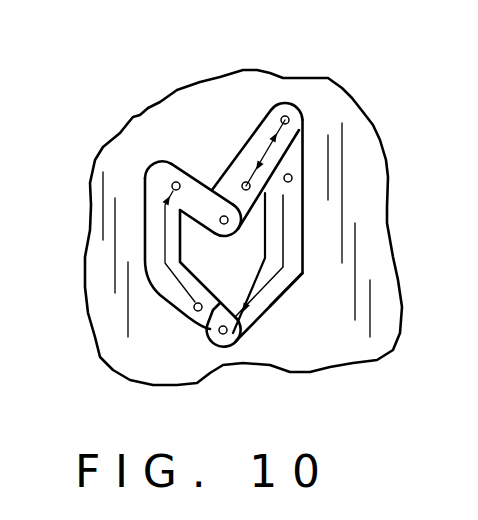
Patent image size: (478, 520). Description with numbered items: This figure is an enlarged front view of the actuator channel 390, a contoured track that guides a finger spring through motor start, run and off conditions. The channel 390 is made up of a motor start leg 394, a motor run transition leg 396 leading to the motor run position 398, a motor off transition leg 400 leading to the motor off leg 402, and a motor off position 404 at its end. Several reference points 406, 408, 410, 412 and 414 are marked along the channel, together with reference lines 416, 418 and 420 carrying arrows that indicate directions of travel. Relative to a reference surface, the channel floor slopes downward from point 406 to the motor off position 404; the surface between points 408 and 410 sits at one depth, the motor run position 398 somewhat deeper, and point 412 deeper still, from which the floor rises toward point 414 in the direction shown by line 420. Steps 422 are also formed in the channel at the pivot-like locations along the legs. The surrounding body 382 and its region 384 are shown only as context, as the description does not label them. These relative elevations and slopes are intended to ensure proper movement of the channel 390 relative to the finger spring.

The body portion 382 is at (305, 146).
The body region 384 is at (290, 256).
The channel 390 is at (318, 242).
The motor start leg 394 is at (304, 207).
The motor run transition leg 396 is at (258, 150).
The motor run position 398 is at (178, 215).
The motor off transition leg 400 is at (193, 200).
The motor off leg 402 is at (146, 226).
The motor off position 404 is at (228, 332).
The reference point 406 is at (234, 203).
The reference point 408 is at (286, 116).
The reference point 410 is at (235, 167).
The reference point 412 is at (156, 161).
The reference point 414 is at (195, 310).
The reference line 416 is at (280, 283).
The reference line 418 is at (263, 137).
The reference line 420 is at (163, 292).
The steps 422 is at (338, 145).